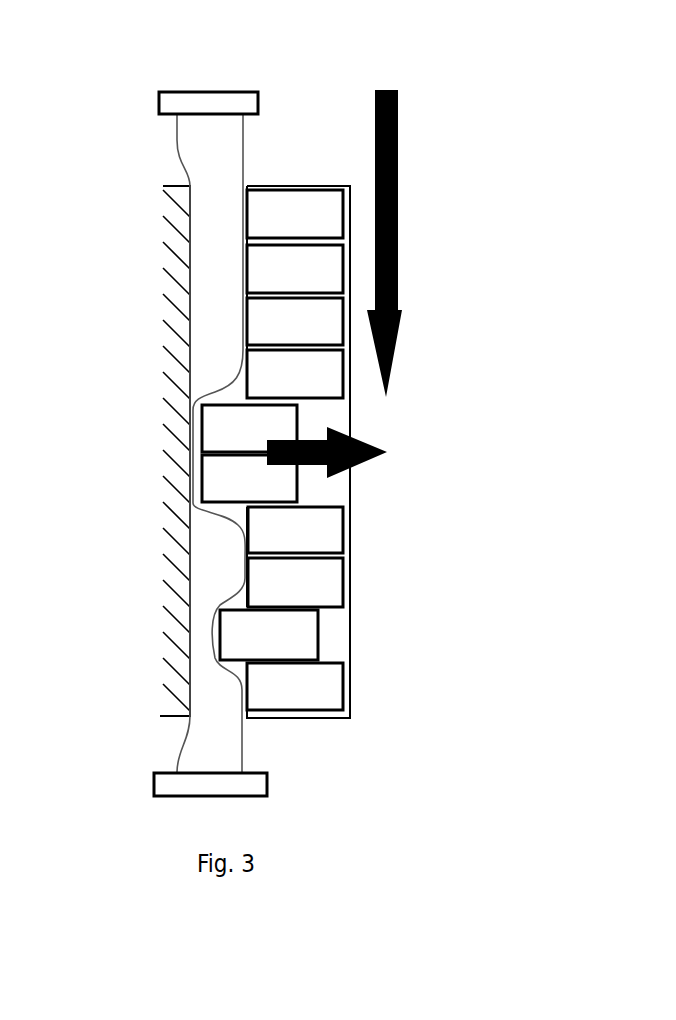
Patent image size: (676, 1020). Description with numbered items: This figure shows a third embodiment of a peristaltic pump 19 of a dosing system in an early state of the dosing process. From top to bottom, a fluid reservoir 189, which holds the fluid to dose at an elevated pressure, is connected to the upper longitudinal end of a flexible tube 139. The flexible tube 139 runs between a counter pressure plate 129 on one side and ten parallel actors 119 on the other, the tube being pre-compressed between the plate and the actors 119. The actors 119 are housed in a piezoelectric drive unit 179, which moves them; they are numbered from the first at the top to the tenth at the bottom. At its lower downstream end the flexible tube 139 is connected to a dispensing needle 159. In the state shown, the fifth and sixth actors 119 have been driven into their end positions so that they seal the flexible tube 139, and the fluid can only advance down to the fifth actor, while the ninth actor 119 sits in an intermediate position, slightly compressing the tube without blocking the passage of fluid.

The peristaltic pump 19 is at (337, 434).
The actors 119 is at (325, 578).
The counter pressure plate 129 is at (183, 563).
The flexible tube 139 is at (215, 166).
The dispensing needle 159 is at (175, 783).
The piezoelectric drive unit 179 is at (387, 452).
The fluid reservoir 189 is at (182, 102).